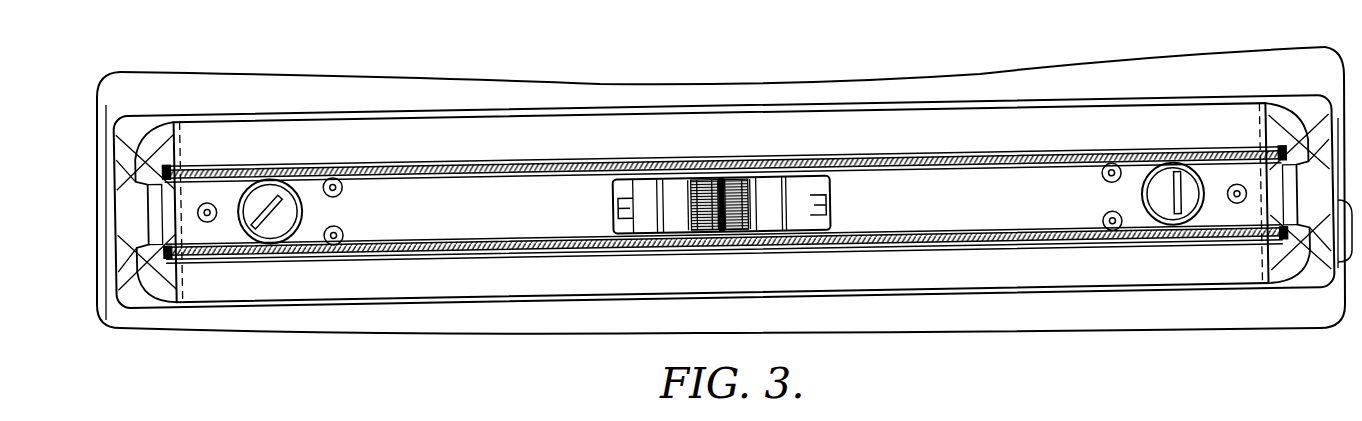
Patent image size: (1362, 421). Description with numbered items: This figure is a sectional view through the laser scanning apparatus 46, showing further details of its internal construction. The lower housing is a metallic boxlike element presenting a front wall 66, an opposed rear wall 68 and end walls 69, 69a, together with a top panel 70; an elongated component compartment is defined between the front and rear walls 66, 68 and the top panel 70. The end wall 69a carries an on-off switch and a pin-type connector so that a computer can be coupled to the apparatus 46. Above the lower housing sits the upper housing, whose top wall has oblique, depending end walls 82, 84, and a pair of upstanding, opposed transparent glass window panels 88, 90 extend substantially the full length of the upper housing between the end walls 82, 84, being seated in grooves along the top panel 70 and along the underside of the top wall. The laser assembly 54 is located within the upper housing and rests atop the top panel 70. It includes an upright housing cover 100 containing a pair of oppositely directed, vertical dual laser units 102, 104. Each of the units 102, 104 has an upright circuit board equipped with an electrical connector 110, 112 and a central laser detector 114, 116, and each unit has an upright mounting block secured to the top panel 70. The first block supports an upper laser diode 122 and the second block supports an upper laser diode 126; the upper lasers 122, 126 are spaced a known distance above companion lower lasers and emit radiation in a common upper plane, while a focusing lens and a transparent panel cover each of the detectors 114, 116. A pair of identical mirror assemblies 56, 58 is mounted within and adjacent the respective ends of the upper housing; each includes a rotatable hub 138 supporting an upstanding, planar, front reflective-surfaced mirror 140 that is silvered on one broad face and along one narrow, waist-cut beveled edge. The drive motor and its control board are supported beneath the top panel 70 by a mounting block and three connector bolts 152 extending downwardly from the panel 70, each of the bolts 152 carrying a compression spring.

The apparatus 46 is at (724, 197).
The laser assembly 54 is at (721, 173).
The mirror assembly 56 is at (285, 212).
The mirror assembly 58 is at (1154, 156).
The front wall 66 is at (862, 313).
The rear wall 68 is at (527, 97).
The end wall 69 is at (137, 155).
The end wall 69a is at (1333, 163).
The top panel 70 is at (721, 202).
The end wall 82 is at (160, 275).
The end wall 84 is at (1280, 197).
The window panel 88 is at (950, 246).
The window panel 90 is at (1031, 150).
The housing cover 100 is at (628, 237).
The dual laser unit 102 is at (604, 190).
The dual laser unit 104 is at (840, 183).
The electrical connector 110 is at (713, 237).
The electrical connector 112 is at (731, 233).
The laser detector 114 is at (700, 207).
The laser detector 116 is at (750, 207).
The laser diode 122 is at (617, 205).
The laser diode 126 is at (830, 203).
The rotatable hub 138 is at (258, 200).
The mirror 140 is at (282, 222).
The connector bolts 152 is at (345, 236).